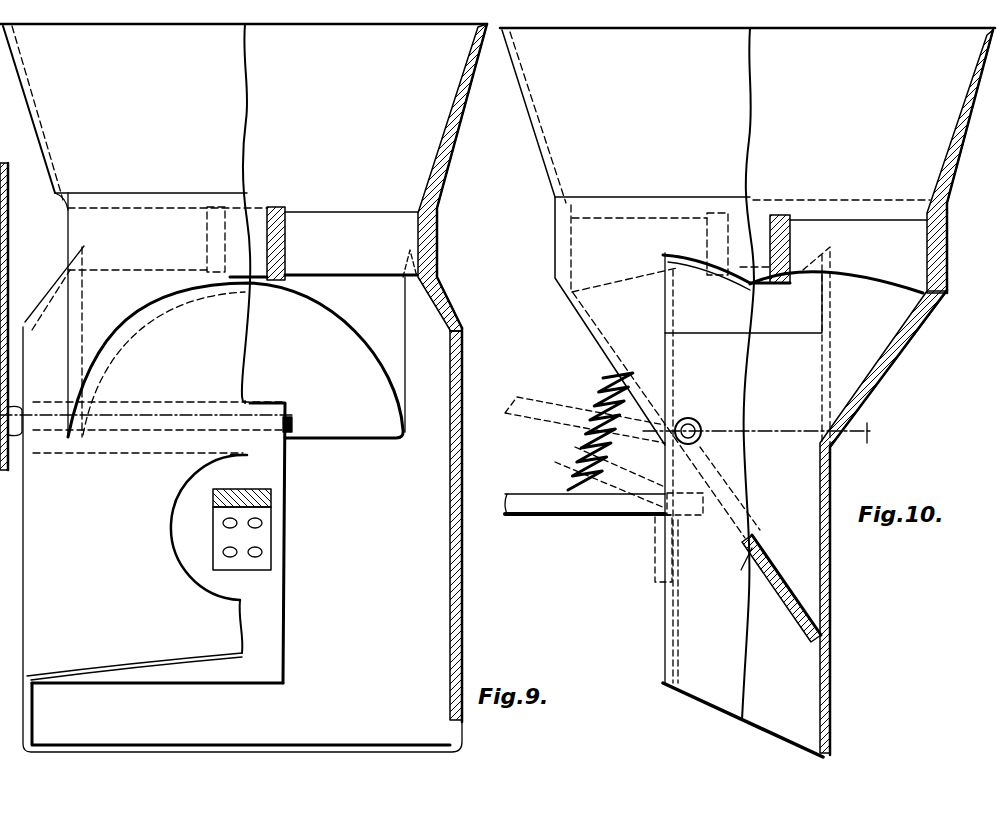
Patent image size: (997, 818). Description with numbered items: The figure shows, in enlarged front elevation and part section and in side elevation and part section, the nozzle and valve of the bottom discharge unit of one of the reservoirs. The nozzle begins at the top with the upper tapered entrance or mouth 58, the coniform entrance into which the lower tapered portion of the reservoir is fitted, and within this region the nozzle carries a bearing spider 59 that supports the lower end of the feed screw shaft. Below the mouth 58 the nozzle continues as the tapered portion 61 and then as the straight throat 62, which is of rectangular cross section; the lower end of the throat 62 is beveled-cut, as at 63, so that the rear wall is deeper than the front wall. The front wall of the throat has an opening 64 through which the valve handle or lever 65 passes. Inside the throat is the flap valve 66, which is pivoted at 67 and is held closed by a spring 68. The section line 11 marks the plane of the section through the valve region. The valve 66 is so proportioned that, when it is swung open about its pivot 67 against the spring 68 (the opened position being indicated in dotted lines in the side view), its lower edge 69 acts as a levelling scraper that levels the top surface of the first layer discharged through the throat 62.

In FIG. 10, the section line 11 is at (762, 431).
In FIG. 9, the coniform entrance 58 is at (243, 177).
In FIG. 10, the coniform entrance 58 is at (747, 283).
In FIG. 9, the bearing spider 59 is at (347, 211).
In FIG. 10, the bearing spider 59 is at (840, 270).
In FIG. 9, the tapered portion 61 is at (38, 268).
In FIG. 10, the tapered portion 61 is at (900, 331).
In FIG. 9, the straight throat 62 is at (462, 572).
In FIG. 10, the straight throat 62 is at (831, 488).
In FIG. 9, the beveled-cut lower end 63 is at (27, 703).
In FIG. 10, the beveled-cut lower end 63 is at (763, 733).
In FIG. 9, the opening 64 is at (172, 532).
In FIG. 10, the opening 64 is at (665, 598).
In FIG. 9, the valve handle or lever 65 is at (271, 500).
In FIG. 10, the valve handle or lever 65 is at (539, 496).
In FIG. 9, the flap valve 66 is at (286, 607).
In FIG. 10, the flap valve 66 is at (762, 558).
In FIG. 9, the pivot 67 is at (291, 420).
In FIG. 10, the pivot 67 is at (695, 421).
In FIG. 10, the spring 68 is at (570, 443).
In FIG. 9, the lower edge 69 is at (148, 684).
In FIG. 10, the lower edge 69 is at (667, 690).